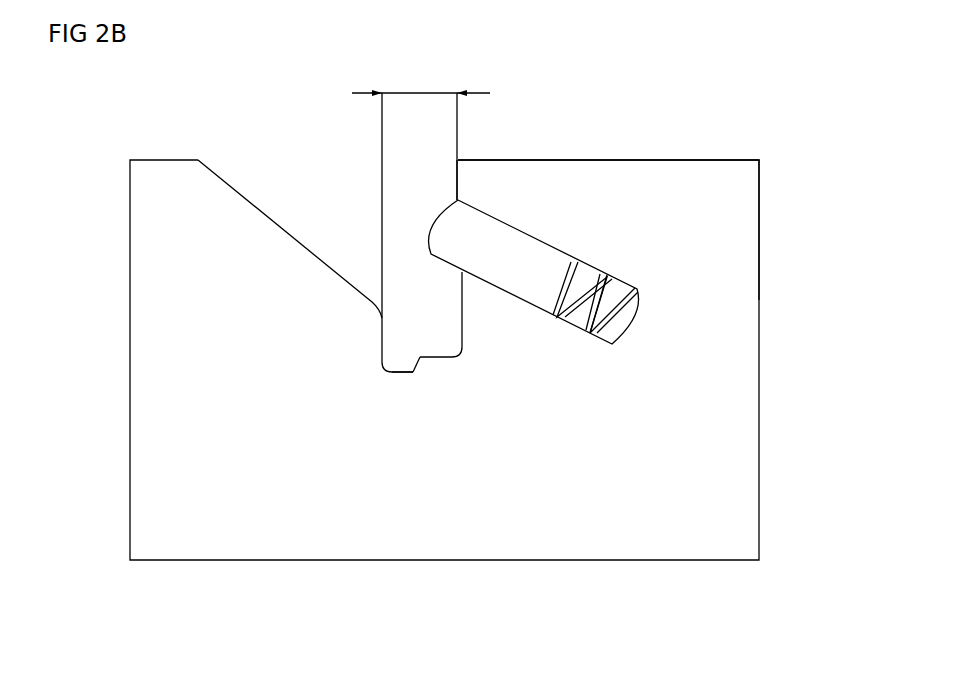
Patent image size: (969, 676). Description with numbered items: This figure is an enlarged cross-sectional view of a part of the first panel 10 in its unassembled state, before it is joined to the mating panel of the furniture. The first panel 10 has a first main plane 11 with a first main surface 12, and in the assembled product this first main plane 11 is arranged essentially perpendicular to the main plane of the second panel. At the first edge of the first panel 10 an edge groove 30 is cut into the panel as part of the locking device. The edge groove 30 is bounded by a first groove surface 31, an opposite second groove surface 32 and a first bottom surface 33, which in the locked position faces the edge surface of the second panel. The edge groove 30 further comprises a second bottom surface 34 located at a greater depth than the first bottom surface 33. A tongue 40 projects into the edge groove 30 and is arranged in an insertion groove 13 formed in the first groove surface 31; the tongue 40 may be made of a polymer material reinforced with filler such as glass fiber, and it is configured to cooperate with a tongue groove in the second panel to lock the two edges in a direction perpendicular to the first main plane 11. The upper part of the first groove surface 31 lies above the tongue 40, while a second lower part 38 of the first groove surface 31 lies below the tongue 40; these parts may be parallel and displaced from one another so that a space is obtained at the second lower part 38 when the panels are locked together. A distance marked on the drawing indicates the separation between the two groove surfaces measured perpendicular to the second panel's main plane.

The first panel 10 is at (716, 525).
The first main plane 11 is at (656, 160).
The first main surface 12 is at (740, 160).
The insertion groove 13 is at (610, 335).
The edge groove 30 is at (295, 158).
The first groove surface 31 is at (460, 184).
The second groove surface 32 is at (380, 338).
The first bottom surface 33 is at (450, 365).
The second bottom surface 34 is at (405, 373).
The second lower part 38 is at (467, 322).
The tongue 40 is at (500, 238).